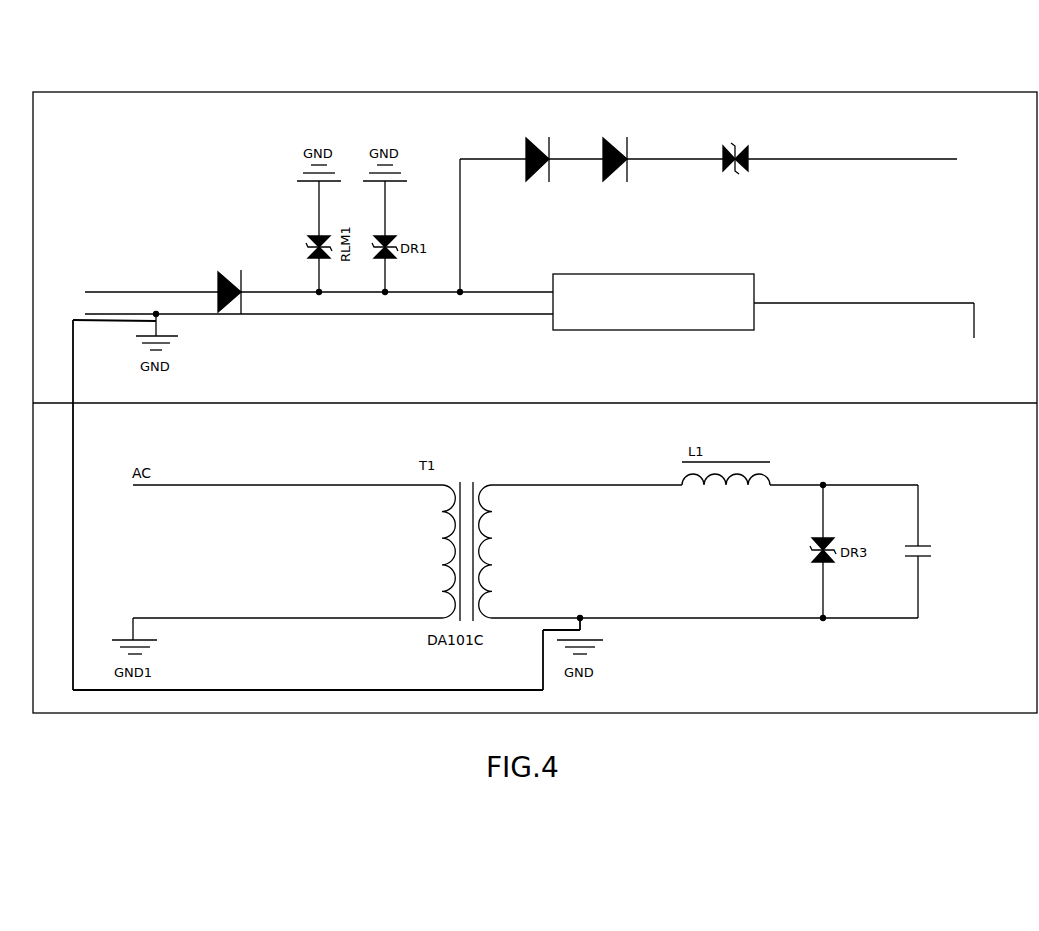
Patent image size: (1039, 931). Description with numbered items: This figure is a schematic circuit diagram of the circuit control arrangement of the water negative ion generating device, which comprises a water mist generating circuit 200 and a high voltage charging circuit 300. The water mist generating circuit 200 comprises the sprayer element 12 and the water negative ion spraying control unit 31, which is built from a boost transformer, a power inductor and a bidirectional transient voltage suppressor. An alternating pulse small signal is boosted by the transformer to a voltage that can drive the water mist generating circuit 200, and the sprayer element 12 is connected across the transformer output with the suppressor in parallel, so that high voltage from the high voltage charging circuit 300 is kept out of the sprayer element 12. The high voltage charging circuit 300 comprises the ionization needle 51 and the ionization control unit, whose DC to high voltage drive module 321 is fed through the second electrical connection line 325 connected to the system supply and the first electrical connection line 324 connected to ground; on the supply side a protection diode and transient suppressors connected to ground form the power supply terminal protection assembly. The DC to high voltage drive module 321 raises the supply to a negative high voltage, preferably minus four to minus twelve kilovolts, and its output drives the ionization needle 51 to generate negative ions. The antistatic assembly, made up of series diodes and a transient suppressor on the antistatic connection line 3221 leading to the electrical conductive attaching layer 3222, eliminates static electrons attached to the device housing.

The second electrical connection line 325 is at (502, 290).
The first electrical connection line 324 is at (367, 314).
The DC to high voltage drive module 321 is at (660, 328).
The antistatic connection line 3221 is at (668, 159).
The electrical conductive attaching layer 3222 is at (843, 159).
The high voltage charging circuit 300 is at (838, 303).
The ionization needle 51 is at (972, 338).
The water negative ion spraying control unit 31 is at (793, 485).
The sprayer element 12 is at (920, 560).
The water mist generating circuit 200 is at (718, 618).